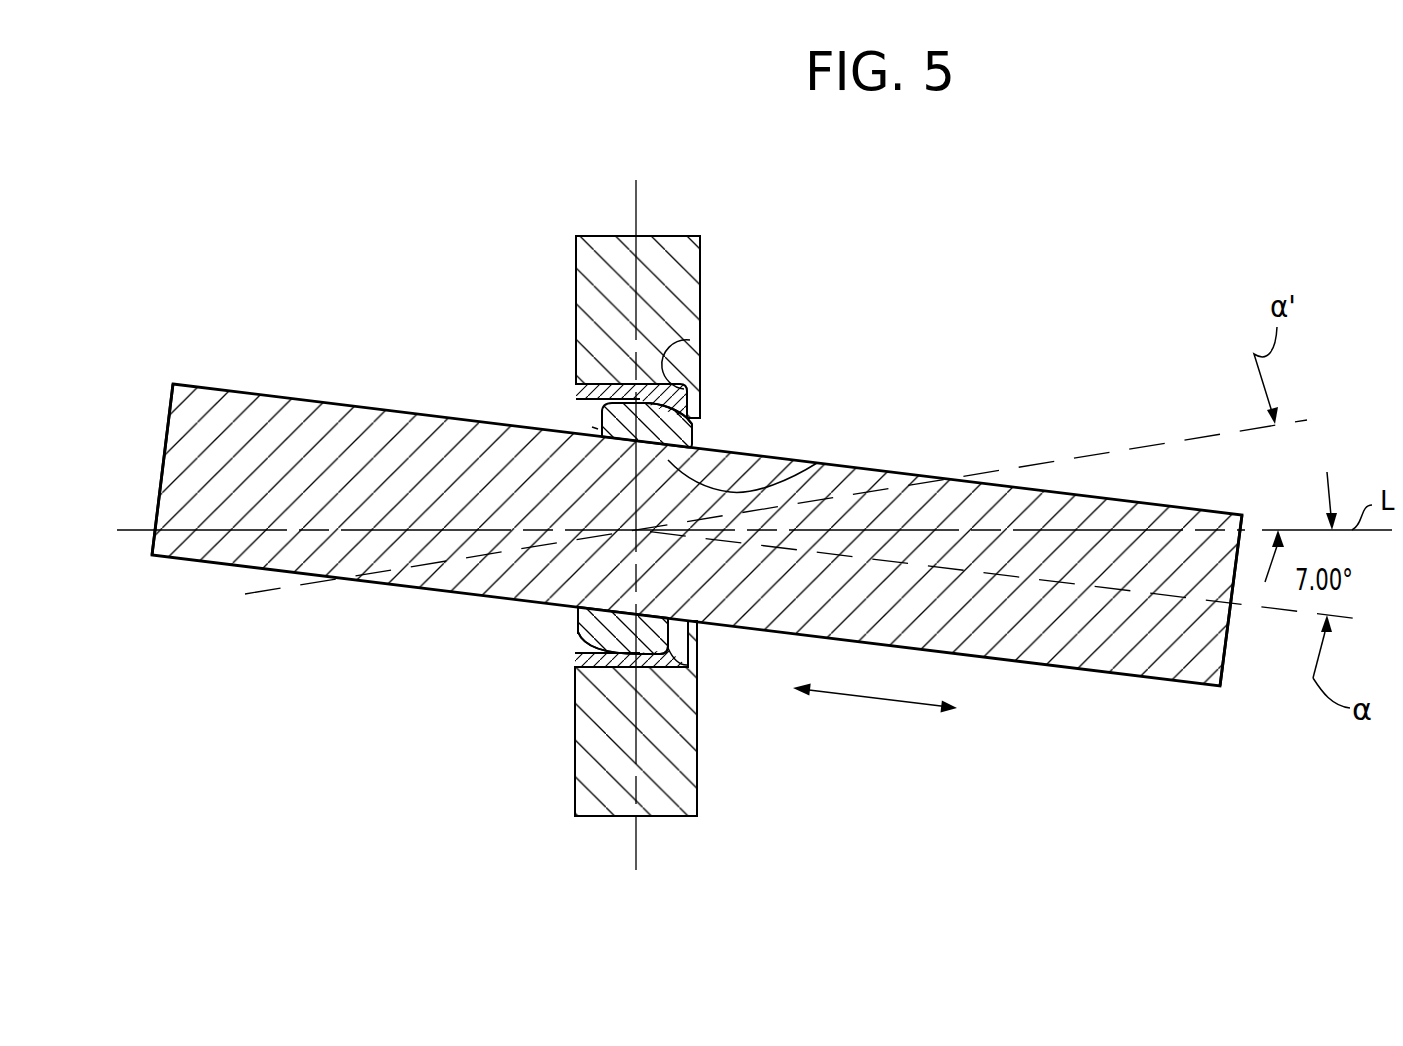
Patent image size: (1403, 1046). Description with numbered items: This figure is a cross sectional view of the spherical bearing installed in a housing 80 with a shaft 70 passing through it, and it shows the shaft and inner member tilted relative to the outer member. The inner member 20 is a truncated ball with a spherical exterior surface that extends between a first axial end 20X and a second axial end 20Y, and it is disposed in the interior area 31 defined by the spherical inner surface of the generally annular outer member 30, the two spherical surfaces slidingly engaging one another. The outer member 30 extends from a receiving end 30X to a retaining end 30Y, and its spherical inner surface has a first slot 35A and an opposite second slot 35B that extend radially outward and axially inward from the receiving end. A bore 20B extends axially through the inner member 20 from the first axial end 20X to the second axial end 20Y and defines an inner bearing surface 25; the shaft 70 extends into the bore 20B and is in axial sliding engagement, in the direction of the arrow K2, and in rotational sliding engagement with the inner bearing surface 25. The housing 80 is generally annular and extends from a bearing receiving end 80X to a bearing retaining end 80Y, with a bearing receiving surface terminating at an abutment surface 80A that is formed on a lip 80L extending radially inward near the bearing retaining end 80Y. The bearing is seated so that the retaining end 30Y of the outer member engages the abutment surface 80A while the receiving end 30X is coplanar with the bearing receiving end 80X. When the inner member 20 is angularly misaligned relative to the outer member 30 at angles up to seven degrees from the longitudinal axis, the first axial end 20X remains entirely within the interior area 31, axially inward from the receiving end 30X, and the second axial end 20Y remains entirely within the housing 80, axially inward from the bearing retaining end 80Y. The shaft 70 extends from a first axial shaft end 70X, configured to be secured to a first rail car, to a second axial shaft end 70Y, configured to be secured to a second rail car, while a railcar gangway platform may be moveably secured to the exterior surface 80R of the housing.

The shaft 70 is at (237, 493).
The first axial shaft end 70X is at (162, 467).
The second axial shaft end 70Y is at (1227, 640).
The inner bearing surface 25 is at (817, 463).
The housing 80 is at (667, 255).
The exterior surface of the housing 80R is at (599, 236).
The bearing receiving end 80X is at (576, 287).
The bearing retaining end 80Y is at (702, 300).
The abutment surface 80A is at (690, 343).
The lip 80L is at (712, 402).
The first slot 35A is at (586, 409).
The second slot 35B is at (575, 652).
The interior area 31 is at (578, 425).
The inner member 20 is at (565, 613).
The second axial end 20Y is at (695, 432).
The bore 20B is at (698, 632).
The first axial end 20X is at (563, 648).
The outer member 30 is at (622, 740).
The receiving end 30X is at (575, 662).
The retaining end 30Y is at (698, 655).
The arrow K2 is at (900, 702).